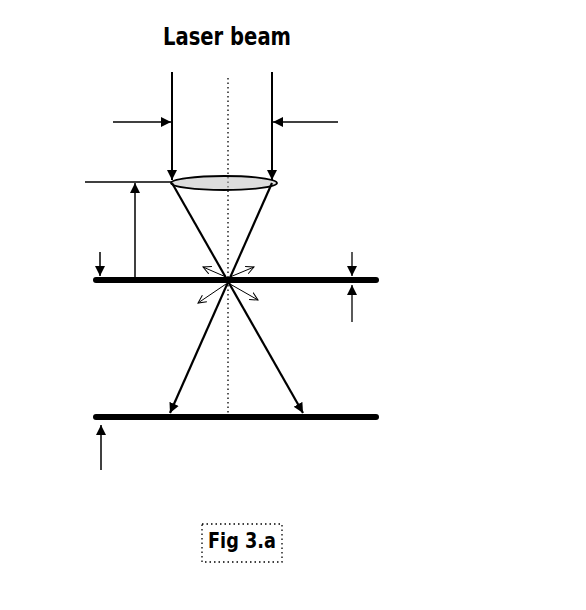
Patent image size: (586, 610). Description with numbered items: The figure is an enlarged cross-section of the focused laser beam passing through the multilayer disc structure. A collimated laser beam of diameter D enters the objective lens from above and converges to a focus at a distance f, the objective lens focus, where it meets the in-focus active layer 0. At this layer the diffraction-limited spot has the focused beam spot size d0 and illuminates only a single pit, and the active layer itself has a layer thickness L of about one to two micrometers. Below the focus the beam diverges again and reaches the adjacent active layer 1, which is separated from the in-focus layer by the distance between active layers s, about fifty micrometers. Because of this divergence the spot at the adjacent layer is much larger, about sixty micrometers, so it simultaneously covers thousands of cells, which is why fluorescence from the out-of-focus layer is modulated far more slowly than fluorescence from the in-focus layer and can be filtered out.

The laser beam diameter D is at (238, 123).
The objective lens focus f is at (128, 231).
The distance between active layers s is at (93, 252).
The plane 0 (focal plane / workpiece surface) 0 is at (250, 284).
The plane 1 (defocused plane) 1 is at (254, 420).
The layer thickness L is at (358, 268).
The focused beam spot size d0 is at (318, 213).